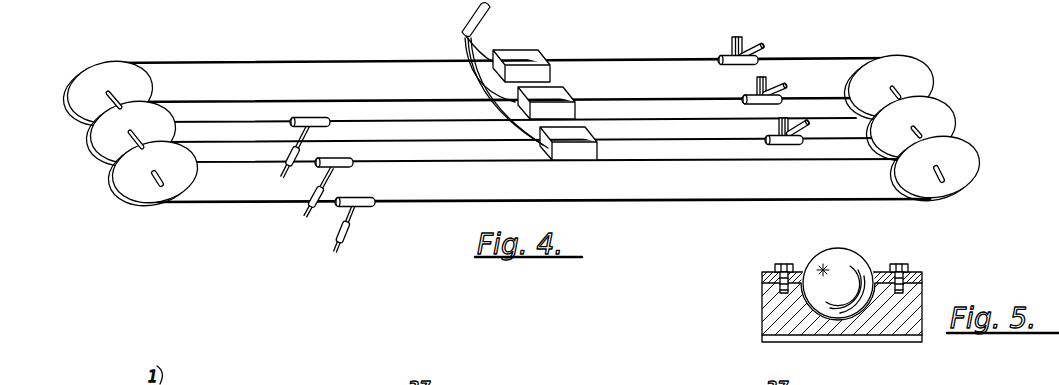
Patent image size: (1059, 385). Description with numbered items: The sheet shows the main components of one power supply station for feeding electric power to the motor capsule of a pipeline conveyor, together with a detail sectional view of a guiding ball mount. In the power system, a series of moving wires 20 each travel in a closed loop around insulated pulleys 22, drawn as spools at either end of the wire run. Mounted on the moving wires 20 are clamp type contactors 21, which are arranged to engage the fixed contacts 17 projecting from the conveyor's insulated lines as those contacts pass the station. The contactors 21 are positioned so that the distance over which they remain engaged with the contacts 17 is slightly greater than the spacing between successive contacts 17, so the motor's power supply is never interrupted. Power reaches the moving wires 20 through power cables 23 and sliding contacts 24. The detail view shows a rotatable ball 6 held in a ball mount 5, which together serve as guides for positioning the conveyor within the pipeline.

In FIG. 5, the ball mount 5 is at (922, 272).
In FIG. 5, the rotatable ball 6 is at (857, 257).
In FIG. 4, the fixed contact 17 is at (335, 250).
In FIG. 4, the moving wire 20 is at (435, 143).
In FIG. 4, the clamp type contactor 21 is at (729, 53).
In FIG. 4, the insulated pulley 22 is at (116, 183).
In FIG. 4, the power cable 23 is at (466, 28).
In FIG. 4, the sliding contact 24 is at (582, 134).